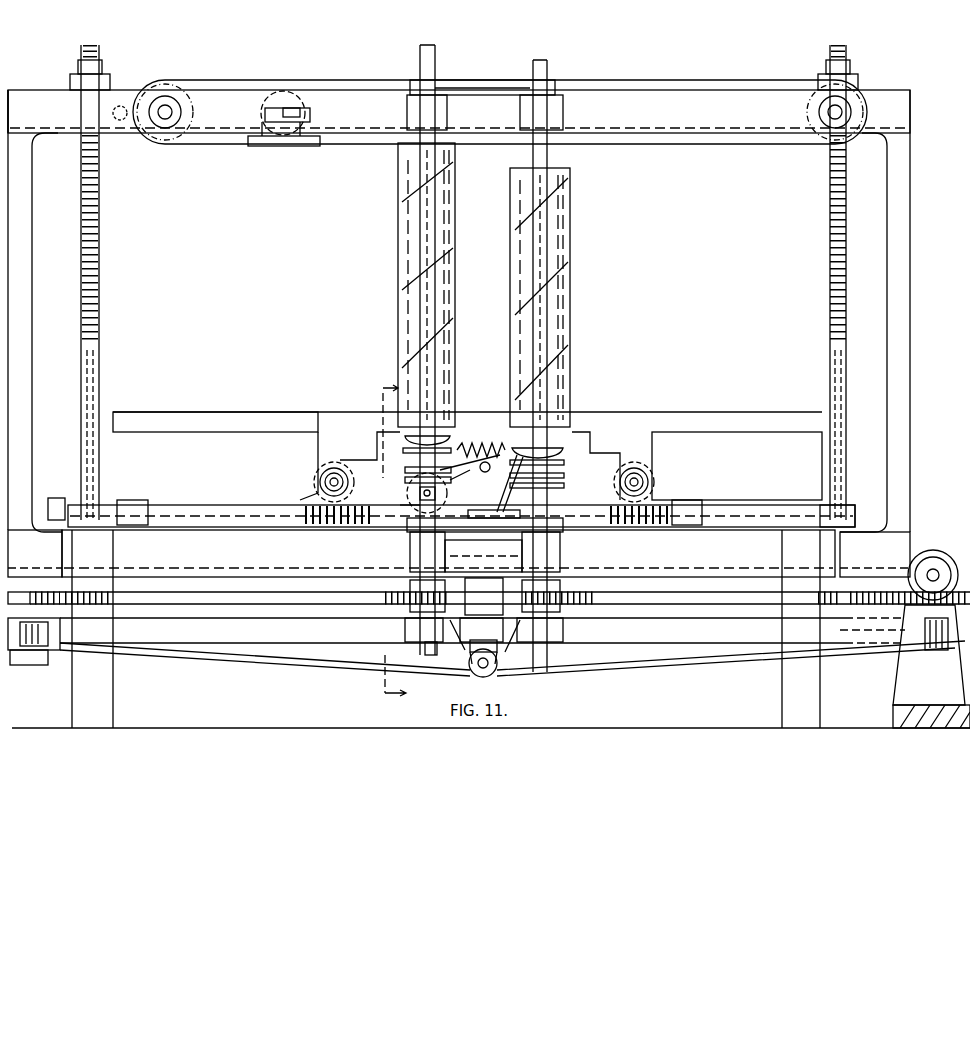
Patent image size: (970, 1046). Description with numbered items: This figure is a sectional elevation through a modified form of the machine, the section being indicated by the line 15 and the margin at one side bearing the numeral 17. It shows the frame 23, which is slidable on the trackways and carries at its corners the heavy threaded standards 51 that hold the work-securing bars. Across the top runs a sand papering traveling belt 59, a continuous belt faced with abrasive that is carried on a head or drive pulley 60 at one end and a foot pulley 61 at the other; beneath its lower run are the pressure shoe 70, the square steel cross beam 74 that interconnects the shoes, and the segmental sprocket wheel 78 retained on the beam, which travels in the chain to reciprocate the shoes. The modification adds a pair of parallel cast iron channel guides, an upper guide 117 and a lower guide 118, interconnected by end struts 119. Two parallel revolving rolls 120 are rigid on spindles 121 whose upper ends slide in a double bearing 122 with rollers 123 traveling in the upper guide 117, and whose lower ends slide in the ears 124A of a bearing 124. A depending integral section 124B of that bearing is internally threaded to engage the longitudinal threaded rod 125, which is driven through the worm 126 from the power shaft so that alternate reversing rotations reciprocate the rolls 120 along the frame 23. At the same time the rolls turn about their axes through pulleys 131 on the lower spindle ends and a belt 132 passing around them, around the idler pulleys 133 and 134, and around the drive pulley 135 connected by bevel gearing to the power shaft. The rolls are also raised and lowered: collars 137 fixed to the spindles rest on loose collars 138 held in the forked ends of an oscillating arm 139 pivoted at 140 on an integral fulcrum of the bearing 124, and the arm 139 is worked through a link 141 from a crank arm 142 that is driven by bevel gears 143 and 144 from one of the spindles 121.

The frame 17 is at (28, 93).
The frame 23 is at (852, 512).
The fixed heavy standard 51 is at (100, 365).
The sand papering traveling belt 59 is at (238, 90).
The head pulley 60 is at (815, 96).
The foot pulley 61 is at (172, 96).
The pressure shoe 70 is at (285, 142).
The cross beam 74 is at (300, 116).
The sprocket wheel 78 is at (281, 98).
The upper channel guide 117 is at (640, 92).
The lower channel guide 118 is at (736, 540).
The end strut 119 is at (28, 418).
The revolving roll 120 is at (398, 300).
The spindle 121 is at (437, 56).
The double bearing 122 is at (480, 80).
The roller 123 is at (565, 100).
The bearing 124 is at (562, 558).
The ear 124A is at (415, 528).
The depending integral section 124B is at (440, 650).
The threaded rod 125 is at (738, 600).
The worm 126 is at (969, 560).
The pulley 131 is at (400, 630).
The belt 132 is at (640, 668).
The idler pulley 133 is at (505, 655).
The idler pulley 134 is at (497, 676).
The drive pulley 135 is at (884, 648).
The collar 137 is at (560, 450).
The loose collar 138 is at (565, 462).
The oscillating arm 139 is at (580, 470).
The pivot 140 is at (465, 480).
The link 141 is at (355, 457).
The crank arm 142 is at (313, 482).
The bevel gear 143 is at (410, 497).
The bevel gear 144 is at (420, 505).
The section line 15 is at (380, 545).